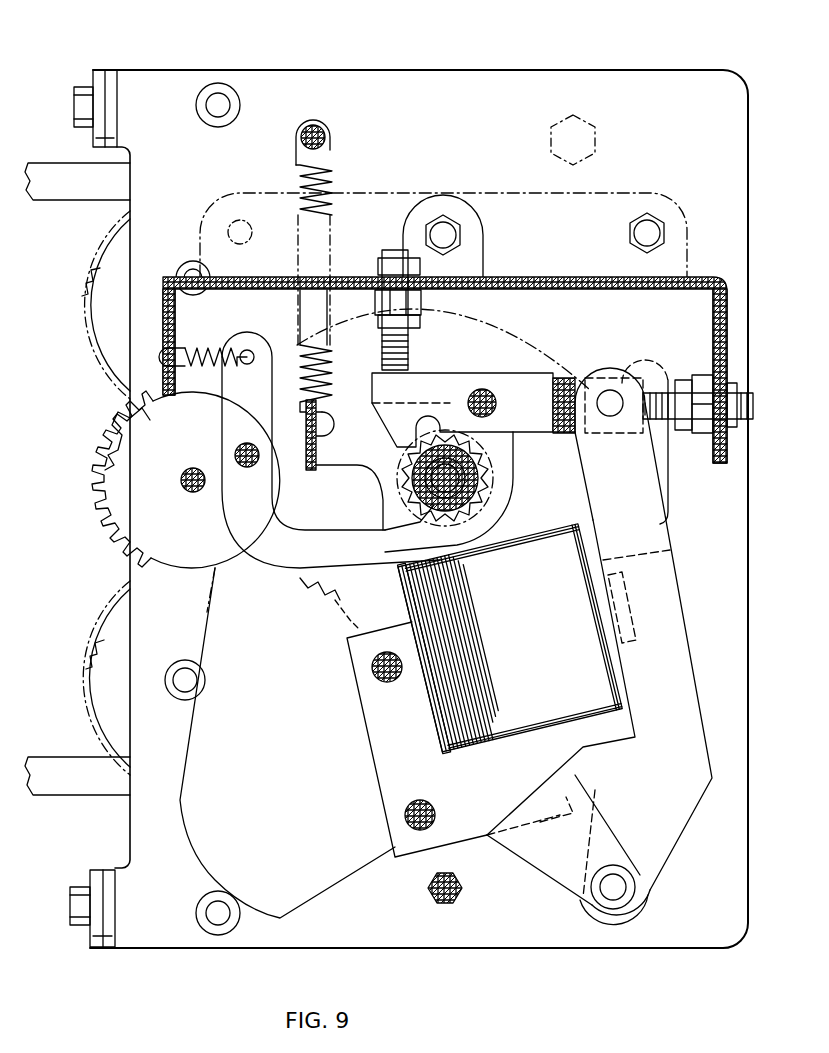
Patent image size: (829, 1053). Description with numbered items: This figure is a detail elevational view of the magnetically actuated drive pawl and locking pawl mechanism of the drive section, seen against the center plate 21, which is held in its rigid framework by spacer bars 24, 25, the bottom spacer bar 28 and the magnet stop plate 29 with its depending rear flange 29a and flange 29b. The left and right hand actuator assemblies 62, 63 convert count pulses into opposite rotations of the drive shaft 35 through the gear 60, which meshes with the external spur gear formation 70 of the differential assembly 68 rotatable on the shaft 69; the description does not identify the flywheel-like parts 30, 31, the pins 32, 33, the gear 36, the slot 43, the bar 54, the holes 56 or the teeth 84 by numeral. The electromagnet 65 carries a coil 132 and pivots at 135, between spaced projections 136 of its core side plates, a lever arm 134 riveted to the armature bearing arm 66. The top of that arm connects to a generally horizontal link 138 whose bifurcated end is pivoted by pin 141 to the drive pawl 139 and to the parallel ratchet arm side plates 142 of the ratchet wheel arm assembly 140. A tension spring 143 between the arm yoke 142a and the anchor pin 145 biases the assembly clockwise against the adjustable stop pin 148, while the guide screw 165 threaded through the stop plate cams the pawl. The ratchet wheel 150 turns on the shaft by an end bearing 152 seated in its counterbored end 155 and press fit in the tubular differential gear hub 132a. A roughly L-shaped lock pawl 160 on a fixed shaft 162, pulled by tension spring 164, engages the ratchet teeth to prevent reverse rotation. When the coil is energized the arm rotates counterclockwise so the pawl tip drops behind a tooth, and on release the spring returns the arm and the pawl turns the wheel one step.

The center plate 21 is at (686, 80).
The spacer bar 24 is at (98, 78).
The spacer bar 25 is at (90, 938).
The bottom spacer bar 28 is at (445, 905).
The magnet stop plate 29 is at (570, 275).
The stop plate rear flange 29a is at (725, 320).
The stop plate flange 29b is at (163, 322).
The upper flywheel 30 is at (72, 337).
The lower flywheel 31 is at (74, 724).
The pivot pin 32 is at (190, 268).
The pivot pin 33 is at (182, 672).
The drive shaft 35 is at (180, 480).
The gear 36 is at (90, 480).
The guide slot 43 is at (335, 262).
The shaft 54 is at (58, 163).
The mounting hole 56 is at (232, 105).
The gear 60 is at (113, 417).
The left hand actuator assembly 62 is at (172, 806).
The right hand actuator assembly 63 is at (713, 652).
The electromagnet 65 is at (385, 768).
The armature bearing arm 66 is at (207, 612).
The differential assembly 68 is at (306, 608).
The shaft 69 is at (458, 484).
The external spur gear formation 70 is at (570, 334).
The flywheel teeth 84 is at (92, 282).
The coil 132 is at (492, 673).
The tubular differential gear hub 132a is at (490, 481).
The lever arm 134 is at (663, 540).
The pivot 135 is at (620, 887).
The spaced projections 136 is at (635, 905).
The link 138 is at (565, 378).
The drive pawl 139 is at (435, 372).
The ratchet wheel arm assembly 140 is at (492, 542).
The pin 141 is at (483, 389).
The ratchet arm side plates 142 is at (515, 455).
The arm yoke 142a is at (312, 472).
The tension spring 143 is at (330, 168).
The anchor pin 145 is at (313, 125).
The adjustable stop pin 148 is at (755, 398).
The ratchet wheel 150 is at (438, 508).
The end bearing 152 is at (415, 467).
The reduced counterbored end 155 is at (458, 500).
The lock pawl 160 is at (260, 574).
The fixed shaft 162 is at (235, 448).
The tension spring 164 is at (210, 350).
The guide screw 165 is at (390, 258).